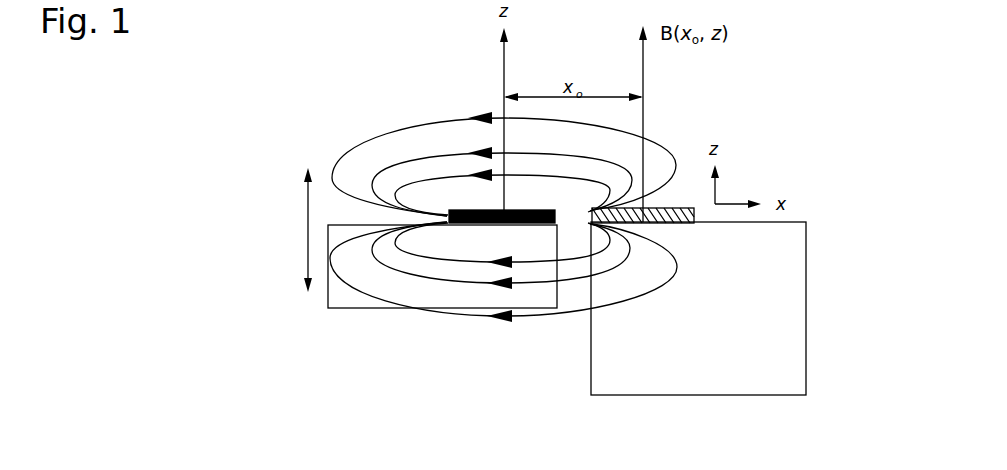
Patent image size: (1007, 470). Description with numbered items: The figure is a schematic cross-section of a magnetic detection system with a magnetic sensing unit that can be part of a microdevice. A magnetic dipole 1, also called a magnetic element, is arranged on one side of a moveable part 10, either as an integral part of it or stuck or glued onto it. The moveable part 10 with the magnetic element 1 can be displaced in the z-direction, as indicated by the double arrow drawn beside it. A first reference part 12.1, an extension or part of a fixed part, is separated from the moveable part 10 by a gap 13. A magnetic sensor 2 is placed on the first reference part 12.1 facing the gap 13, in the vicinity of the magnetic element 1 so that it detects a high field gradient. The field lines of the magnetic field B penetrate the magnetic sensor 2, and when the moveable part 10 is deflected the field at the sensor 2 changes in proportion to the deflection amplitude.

The magnetic dipole 1 is at (466, 210).
The magnetic sensor 2 is at (690, 207).
The moveable part 10 is at (345, 297).
The first reference part 12.1 is at (775, 313).
The gap 13 is at (573, 290).